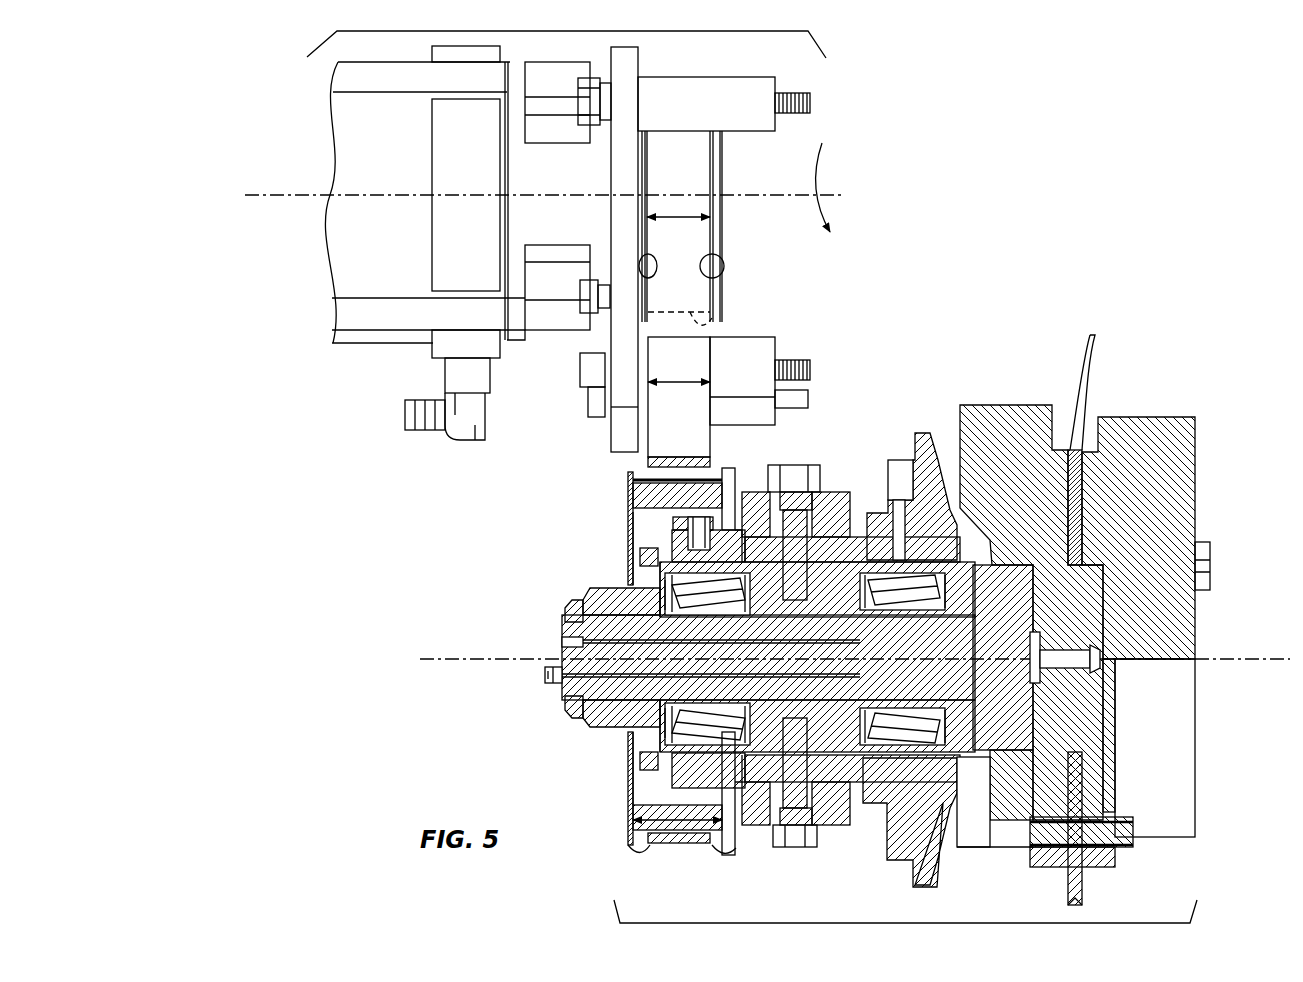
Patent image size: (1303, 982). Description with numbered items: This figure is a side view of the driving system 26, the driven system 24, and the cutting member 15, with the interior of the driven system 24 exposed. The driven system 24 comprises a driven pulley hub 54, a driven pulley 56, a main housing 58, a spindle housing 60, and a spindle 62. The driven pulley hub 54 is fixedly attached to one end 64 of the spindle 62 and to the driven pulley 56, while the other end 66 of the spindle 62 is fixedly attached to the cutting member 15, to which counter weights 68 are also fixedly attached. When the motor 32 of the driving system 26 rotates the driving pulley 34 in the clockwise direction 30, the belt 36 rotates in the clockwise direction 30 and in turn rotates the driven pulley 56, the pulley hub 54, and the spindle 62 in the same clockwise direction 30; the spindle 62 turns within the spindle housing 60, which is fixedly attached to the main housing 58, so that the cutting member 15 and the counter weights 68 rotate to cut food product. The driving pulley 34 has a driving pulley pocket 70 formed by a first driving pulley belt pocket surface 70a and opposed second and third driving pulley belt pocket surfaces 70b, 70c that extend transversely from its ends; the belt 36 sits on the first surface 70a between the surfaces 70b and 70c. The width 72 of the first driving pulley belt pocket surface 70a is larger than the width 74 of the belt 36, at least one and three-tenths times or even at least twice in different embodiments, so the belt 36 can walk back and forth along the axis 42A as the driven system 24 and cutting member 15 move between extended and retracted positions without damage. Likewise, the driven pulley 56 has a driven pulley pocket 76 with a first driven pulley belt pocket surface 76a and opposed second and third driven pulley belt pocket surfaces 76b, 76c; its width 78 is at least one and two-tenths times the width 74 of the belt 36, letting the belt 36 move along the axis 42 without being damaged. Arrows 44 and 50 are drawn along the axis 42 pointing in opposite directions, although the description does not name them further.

The driving system 26 is at (560, 31).
The axis 42A is at (305, 193).
The motor 32 is at (378, 318).
The driving pulley 34 is at (722, 165).
The belt 36 is at (683, 178).
The width of first driving pulley belt pocket surface 72 is at (680, 222).
The width of belt 74 is at (686, 385).
The driving pulley pocket 70 is at (688, 340).
The first driving pulley belt pocket surface 70a is at (712, 318).
The second driving pulley belt pocket surface 70b is at (655, 268).
The third driving pulley belt pocket surface 70c is at (702, 268).
The clockwise direction 30 is at (835, 176).
The axis 42 is at (475, 656).
The spindle 62 is at (670, 663).
The driven pulley hub 54 is at (607, 597).
The end of spindle 64 is at (608, 628).
The width of first driven pulley belt pocket surface 78 is at (675, 808).
The driven pulley pocket 76 is at (633, 868).
The first driven pulley belt pocket surface 76a is at (668, 842).
The second driven pulley belt pocket surface 76b is at (712, 852).
The third driven pulley belt pocket surface 76c is at (637, 852).
The driven pulley 56 is at (728, 470).
The spindle housing 60 is at (833, 500).
The main housing 58 is at (922, 437).
The counter weights 68 is at (997, 417).
The other end of spindle 66 is at (1015, 605).
The cutting member 15 is at (1078, 362).
The axial direction 44 is at (1205, 605).
The opposite axial direction 50 is at (1281, 713).
The driven system 24 is at (886, 923).